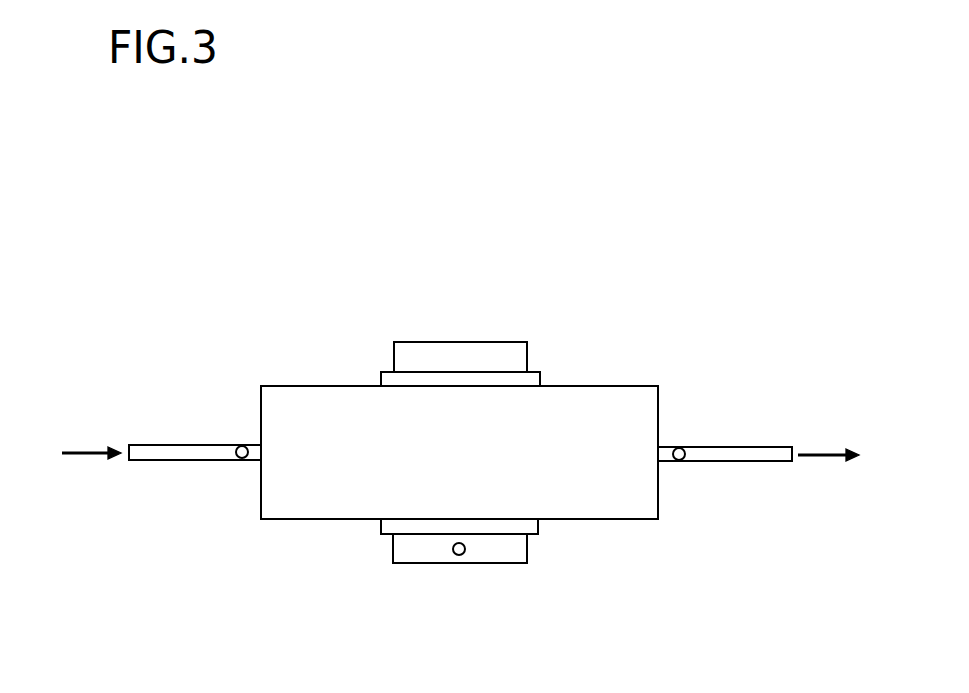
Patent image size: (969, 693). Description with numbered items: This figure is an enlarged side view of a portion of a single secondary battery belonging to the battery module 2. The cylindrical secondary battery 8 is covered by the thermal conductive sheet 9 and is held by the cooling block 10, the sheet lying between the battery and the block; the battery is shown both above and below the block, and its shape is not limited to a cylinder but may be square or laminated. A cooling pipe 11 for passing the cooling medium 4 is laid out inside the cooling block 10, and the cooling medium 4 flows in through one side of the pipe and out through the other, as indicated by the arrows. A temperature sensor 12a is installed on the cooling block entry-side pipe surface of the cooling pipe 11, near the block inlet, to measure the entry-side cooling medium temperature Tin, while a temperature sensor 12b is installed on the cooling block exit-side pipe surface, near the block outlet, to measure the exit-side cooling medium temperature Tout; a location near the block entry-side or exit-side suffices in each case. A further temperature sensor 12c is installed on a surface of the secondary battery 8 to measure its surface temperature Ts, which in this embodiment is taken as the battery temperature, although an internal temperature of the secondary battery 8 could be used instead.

The battery module 2 is at (659, 294).
The cooling medium 4 is at (82, 450).
The secondary battery 8 is at (527, 348).
The thermal conductive sheet 9 is at (540, 375).
The cooling block 10 is at (628, 387).
The cooling pipe 11 is at (195, 460).
The temperature sensor 12a is at (239, 447).
The temperature sensor 12b is at (681, 460).
The temperature sensor 12c is at (461, 555).